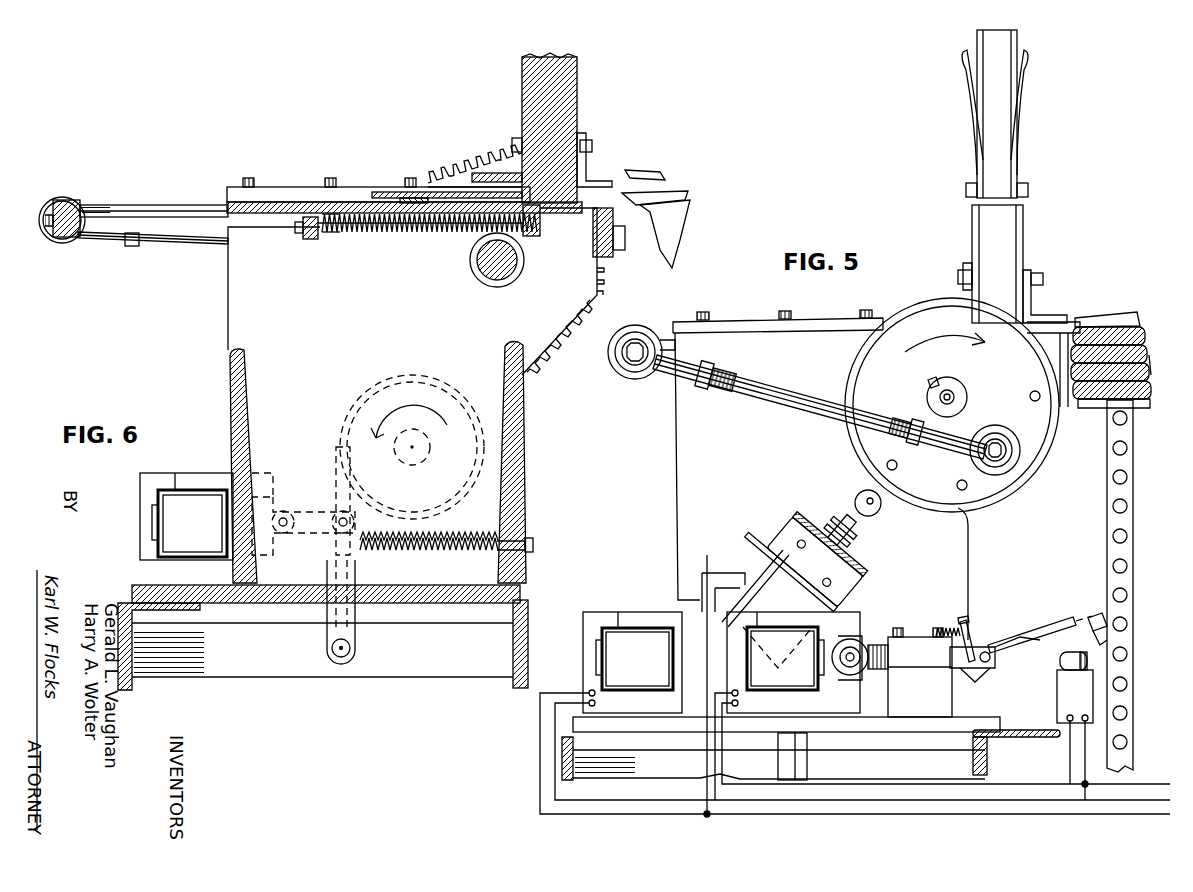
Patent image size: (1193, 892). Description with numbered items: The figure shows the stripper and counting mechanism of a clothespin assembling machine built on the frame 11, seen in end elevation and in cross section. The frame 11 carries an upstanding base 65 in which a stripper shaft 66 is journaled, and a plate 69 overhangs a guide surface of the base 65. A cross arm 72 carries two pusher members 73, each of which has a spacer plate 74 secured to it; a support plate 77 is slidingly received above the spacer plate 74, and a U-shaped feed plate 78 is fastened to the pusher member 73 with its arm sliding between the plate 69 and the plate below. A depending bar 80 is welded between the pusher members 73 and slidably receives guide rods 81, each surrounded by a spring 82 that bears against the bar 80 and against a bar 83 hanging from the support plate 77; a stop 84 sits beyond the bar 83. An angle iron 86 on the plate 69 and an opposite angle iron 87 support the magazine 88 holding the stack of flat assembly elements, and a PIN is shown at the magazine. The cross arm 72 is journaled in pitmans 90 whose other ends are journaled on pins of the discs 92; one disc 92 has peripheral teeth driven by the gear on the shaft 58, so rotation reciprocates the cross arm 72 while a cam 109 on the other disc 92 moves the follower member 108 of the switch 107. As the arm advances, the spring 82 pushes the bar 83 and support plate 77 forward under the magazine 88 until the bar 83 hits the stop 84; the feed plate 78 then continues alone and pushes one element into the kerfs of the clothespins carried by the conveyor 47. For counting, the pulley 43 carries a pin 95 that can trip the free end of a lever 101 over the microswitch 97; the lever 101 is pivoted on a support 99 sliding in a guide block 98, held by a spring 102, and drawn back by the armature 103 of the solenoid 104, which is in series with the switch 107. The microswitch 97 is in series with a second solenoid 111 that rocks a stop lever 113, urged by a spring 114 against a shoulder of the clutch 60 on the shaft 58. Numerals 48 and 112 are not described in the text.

In FIG. 6, the frame 11 is at (528, 625).
In FIG. 5, the frame 11 is at (562, 767).
In FIG. 5, the pulley 43 is at (1107, 520).
In FIG. 6, the conveyor 47 is at (700, 199).
In FIG. 5, the conveyor 47 is at (1155, 328).
In FIG. 5, the spring washers 48 is at (1150, 380).
In FIG. 6, the continuation shaft 58 is at (412, 466).
In FIG. 6, the clutch 60 is at (346, 417).
In FIG. 6, the base 65 is at (232, 393).
In FIG. 5, the base 65 is at (757, 474).
In FIG. 6, the stripper shaft 66 is at (493, 278).
In FIG. 5, the stripper shaft 66 is at (956, 387).
In FIG. 6, the plate 69 is at (455, 175).
In FIG. 6, the cross arm 72 is at (70, 206).
In FIG. 6, the pusher member 73 is at (190, 212).
In FIG. 5, the pusher member 73 is at (665, 340).
In FIG. 6, the spacer plate 74 is at (300, 203).
In FIG. 6, the support plate 77 is at (383, 195).
In FIG. 6, the feed plate 78 is at (412, 200).
In FIG. 6, the depending bar 80 is at (311, 240).
In FIG. 6, the guide rod 81 is at (368, 234).
In FIG. 6, the spring 82 is at (334, 234).
In FIG. 6, the bar 83 is at (537, 236).
In FIG. 6, the stop 84 is at (608, 255).
In FIG. 6, the angle iron 86 is at (494, 173).
In FIG. 5, the angle iron 86 is at (963, 268).
In FIG. 6, the angle iron 87 is at (600, 181).
In FIG. 5, the angle iron 87 is at (1040, 316).
In FIG. 6, the magazine 88 is at (511, 93).
In FIG. 5, the magazine 88 is at (964, 244).
In FIG. 6, the pitman 90 is at (205, 240).
In FIG. 5, the pitman 90 is at (806, 404).
In FIG. 5, the disc 92 is at (778, 339).
In FIG. 5, the pin 95 is at (1095, 620).
In FIG. 5, the microswitch 97 is at (1057, 693).
In FIG. 5, the guide block 98 is at (932, 708).
In FIG. 5, the support 99 is at (872, 645).
In FIG. 5, the lever 101 is at (1031, 630).
In FIG. 5, the spring 102 is at (952, 628).
In FIG. 5, the armature 103 is at (857, 640).
In FIG. 5, the solenoid 104 is at (802, 671).
In FIG. 5, the switch 107 is at (806, 525).
In FIG. 5, the follower member 108 is at (878, 513).
In FIG. 5, the cam 109 is at (951, 510).
In FIG. 6, the second solenoid 111 is at (205, 533).
In FIG. 5, the second solenoid 111 is at (653, 671).
In FIG. 6, the link 112 is at (306, 512).
In FIG. 6, the stop lever 113 is at (337, 466).
In FIG. 5, the stop lever 113 is at (806, 745).
In FIG. 6, the spring 114 is at (422, 553).
In FIG. 6, the pin PIN is at (660, 176).
In FIG. 5, the pin PIN is at (1104, 316).